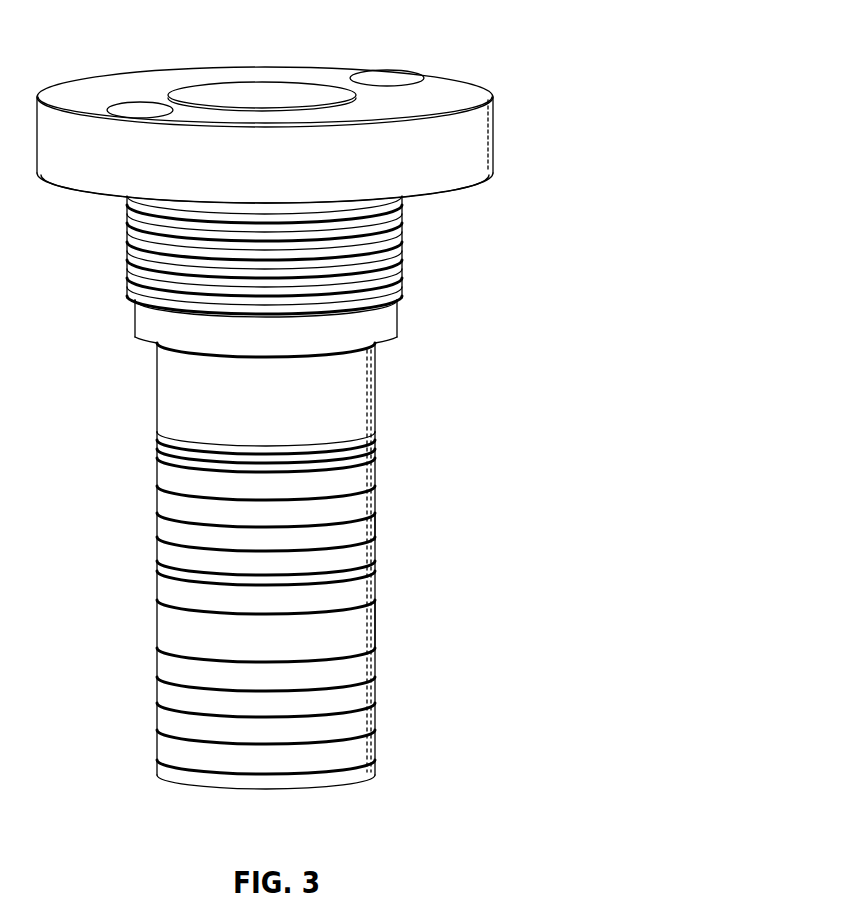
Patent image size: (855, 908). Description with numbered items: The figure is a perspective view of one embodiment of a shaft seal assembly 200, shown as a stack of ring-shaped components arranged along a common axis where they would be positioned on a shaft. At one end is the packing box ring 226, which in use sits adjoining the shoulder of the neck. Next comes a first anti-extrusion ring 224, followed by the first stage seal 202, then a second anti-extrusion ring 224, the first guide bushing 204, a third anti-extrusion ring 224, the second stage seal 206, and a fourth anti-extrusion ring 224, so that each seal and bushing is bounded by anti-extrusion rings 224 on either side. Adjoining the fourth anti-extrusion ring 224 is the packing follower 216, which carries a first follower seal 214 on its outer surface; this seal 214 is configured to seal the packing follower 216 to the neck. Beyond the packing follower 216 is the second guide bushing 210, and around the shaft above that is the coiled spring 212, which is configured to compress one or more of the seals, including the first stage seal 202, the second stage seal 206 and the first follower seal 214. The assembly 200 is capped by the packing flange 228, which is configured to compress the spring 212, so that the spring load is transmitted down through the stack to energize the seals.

The seal assembly 200 is at (493, 43).
The packing flange 228 is at (476, 148).
The spring 212 is at (397, 237).
The second guide bushing 210 is at (396, 326).
The packing follower 216 is at (360, 388).
The first follower seal 214 is at (375, 438).
The second stage seal 206 is at (368, 530).
The first guide bushing 204 is at (366, 614).
The first stage seal 202 is at (362, 702).
The anti-extrusion ring 224 is at (160, 482).
The packing box ring 226 is at (365, 773).